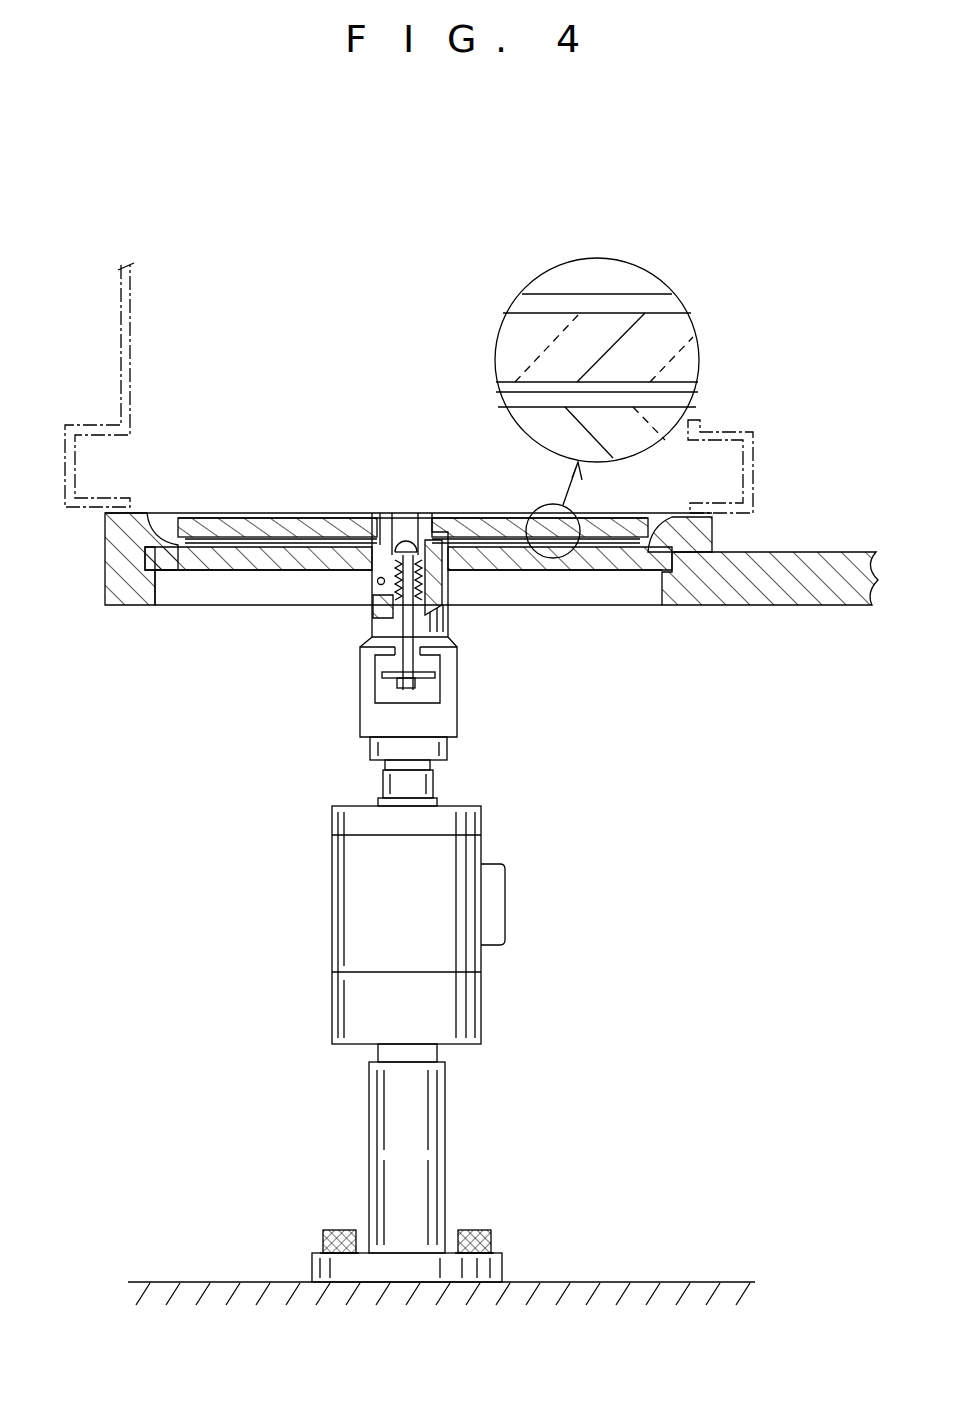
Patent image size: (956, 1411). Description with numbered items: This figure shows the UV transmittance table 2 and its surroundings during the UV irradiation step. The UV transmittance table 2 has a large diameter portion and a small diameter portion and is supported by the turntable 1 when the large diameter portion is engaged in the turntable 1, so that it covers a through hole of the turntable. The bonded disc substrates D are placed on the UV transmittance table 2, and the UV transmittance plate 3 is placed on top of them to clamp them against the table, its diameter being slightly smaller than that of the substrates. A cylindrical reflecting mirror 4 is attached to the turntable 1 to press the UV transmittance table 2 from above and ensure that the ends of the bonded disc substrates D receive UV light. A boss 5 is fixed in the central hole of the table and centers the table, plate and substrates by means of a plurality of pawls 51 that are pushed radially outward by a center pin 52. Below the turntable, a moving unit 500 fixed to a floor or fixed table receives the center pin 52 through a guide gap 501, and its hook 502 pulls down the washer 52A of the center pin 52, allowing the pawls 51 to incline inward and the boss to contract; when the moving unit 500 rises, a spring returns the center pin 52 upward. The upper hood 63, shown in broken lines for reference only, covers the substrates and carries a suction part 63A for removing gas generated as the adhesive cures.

The turntable 1 is at (806, 606).
The UV transmittance table 2 is at (233, 566).
The UV transmittance plate 3 is at (468, 528).
The bonded disc substrates D is at (675, 385).
The cylindrical reflecting mirror 4 is at (252, 513).
The boss 5 is at (470, 630).
The pawls 51 is at (392, 513).
The center pin 52 is at (377, 612).
The guide gap 501 is at (366, 642).
The hook 502 is at (455, 648).
The washer 52A is at (425, 690).
The moving unit 500 is at (537, 862).
The upper hood 63 is at (121, 310).
The suction part 63A is at (78, 425).